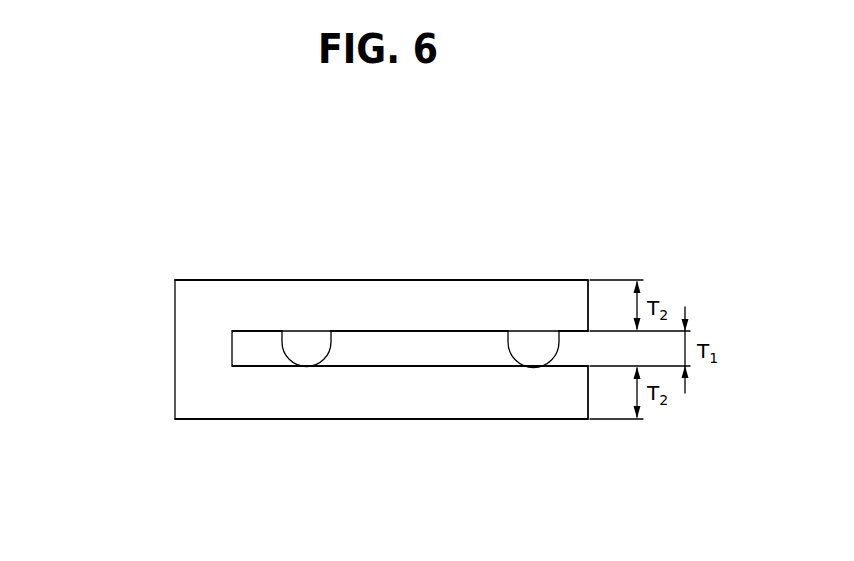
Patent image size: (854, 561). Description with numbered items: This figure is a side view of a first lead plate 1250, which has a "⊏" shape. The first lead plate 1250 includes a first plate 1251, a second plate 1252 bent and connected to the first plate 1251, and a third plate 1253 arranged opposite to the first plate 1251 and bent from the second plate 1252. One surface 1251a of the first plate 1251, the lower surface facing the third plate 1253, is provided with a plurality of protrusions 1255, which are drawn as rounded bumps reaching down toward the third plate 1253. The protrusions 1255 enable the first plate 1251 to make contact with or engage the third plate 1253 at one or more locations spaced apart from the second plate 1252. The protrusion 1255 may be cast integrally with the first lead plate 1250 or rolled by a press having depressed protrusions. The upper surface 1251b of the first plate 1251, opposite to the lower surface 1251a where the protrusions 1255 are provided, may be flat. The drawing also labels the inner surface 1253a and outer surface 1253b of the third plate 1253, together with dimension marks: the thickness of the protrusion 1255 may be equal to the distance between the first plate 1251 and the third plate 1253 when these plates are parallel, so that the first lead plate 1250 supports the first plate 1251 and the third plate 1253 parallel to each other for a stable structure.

The first lead plate 1250 is at (623, 220).
The first plate 1251 is at (360, 288).
The one surface of the first plate 1251a is at (465, 328).
The upper surface of the first plate 1251b is at (280, 279).
The second plate 1252 is at (190, 344).
The third plate 1253 is at (311, 405).
The inner surface of lower plate 1253a is at (408, 368).
The outer surface of lower plate 1253b is at (247, 420).
The protrusion 1255 is at (535, 355).